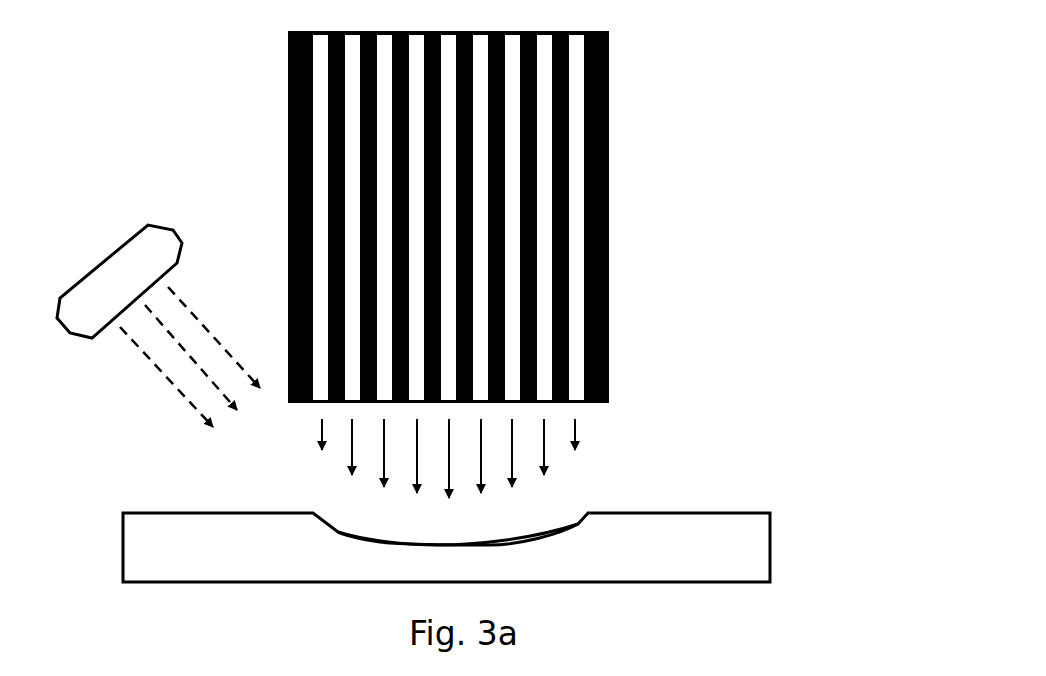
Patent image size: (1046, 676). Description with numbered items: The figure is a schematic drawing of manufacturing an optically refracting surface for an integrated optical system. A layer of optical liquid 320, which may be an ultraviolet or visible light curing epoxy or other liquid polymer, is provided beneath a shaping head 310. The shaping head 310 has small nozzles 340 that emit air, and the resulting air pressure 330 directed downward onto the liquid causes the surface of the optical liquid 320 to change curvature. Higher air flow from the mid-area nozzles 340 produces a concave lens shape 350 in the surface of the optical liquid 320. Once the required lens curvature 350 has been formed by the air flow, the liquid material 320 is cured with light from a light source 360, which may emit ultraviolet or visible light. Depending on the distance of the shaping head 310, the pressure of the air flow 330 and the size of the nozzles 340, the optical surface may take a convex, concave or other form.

The shaping head 310 is at (608, 193).
The layer of optical liquid 320 is at (743, 525).
The air pressure 330 is at (610, 430).
The nozzles 340 is at (608, 295).
The concave lens shape 350 is at (448, 530).
The light source 360 is at (153, 250).